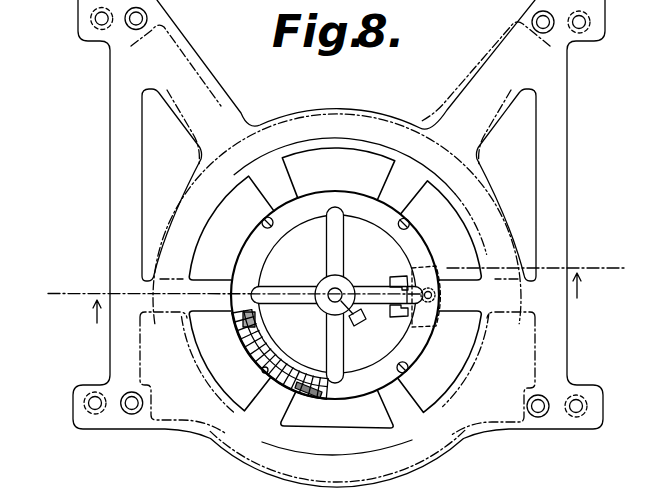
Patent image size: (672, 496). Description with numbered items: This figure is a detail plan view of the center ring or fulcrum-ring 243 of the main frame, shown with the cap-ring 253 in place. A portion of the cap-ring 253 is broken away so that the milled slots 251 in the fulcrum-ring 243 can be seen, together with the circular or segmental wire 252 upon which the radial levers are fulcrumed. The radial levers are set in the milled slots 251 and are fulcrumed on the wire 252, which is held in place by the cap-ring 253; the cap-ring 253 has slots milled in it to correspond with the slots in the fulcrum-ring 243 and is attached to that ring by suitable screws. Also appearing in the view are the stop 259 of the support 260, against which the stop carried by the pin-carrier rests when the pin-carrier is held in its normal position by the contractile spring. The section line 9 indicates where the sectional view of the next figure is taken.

The center ring or fulcrum-ring 243 is at (430, 133).
The milled slots 251 is at (307, 371).
The circular or segmental wire 252 is at (296, 398).
The cap-ring 253 is at (419, 249).
The stop 259 is at (399, 321).
The support 260 is at (413, 328).
The section line 9 9 is at (330, 289).